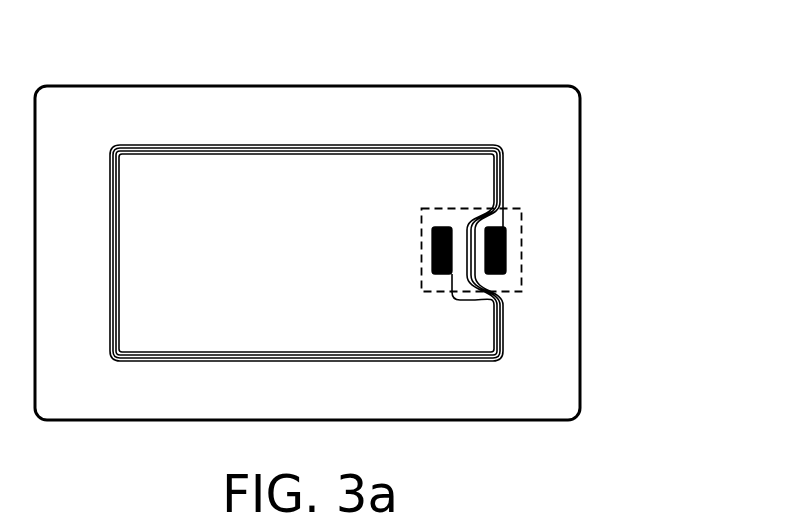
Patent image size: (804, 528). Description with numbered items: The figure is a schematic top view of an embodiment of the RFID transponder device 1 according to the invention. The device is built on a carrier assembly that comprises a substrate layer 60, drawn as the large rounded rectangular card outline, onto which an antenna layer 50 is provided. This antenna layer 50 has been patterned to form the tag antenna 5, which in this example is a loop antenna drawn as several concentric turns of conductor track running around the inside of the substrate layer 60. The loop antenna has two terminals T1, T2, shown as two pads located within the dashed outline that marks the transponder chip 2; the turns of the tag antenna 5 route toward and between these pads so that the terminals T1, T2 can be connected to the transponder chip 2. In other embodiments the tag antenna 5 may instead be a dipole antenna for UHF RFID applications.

The RFID transponder device 1 is at (601, 60).
The transponder chip 2 is at (493, 251).
The tag antenna 5 is at (350, 254).
The antenna layer 50 is at (500, 175).
The substrate layer 60 is at (558, 360).
The first terminal T1 is at (432, 250).
The second terminal T2 is at (506, 247).